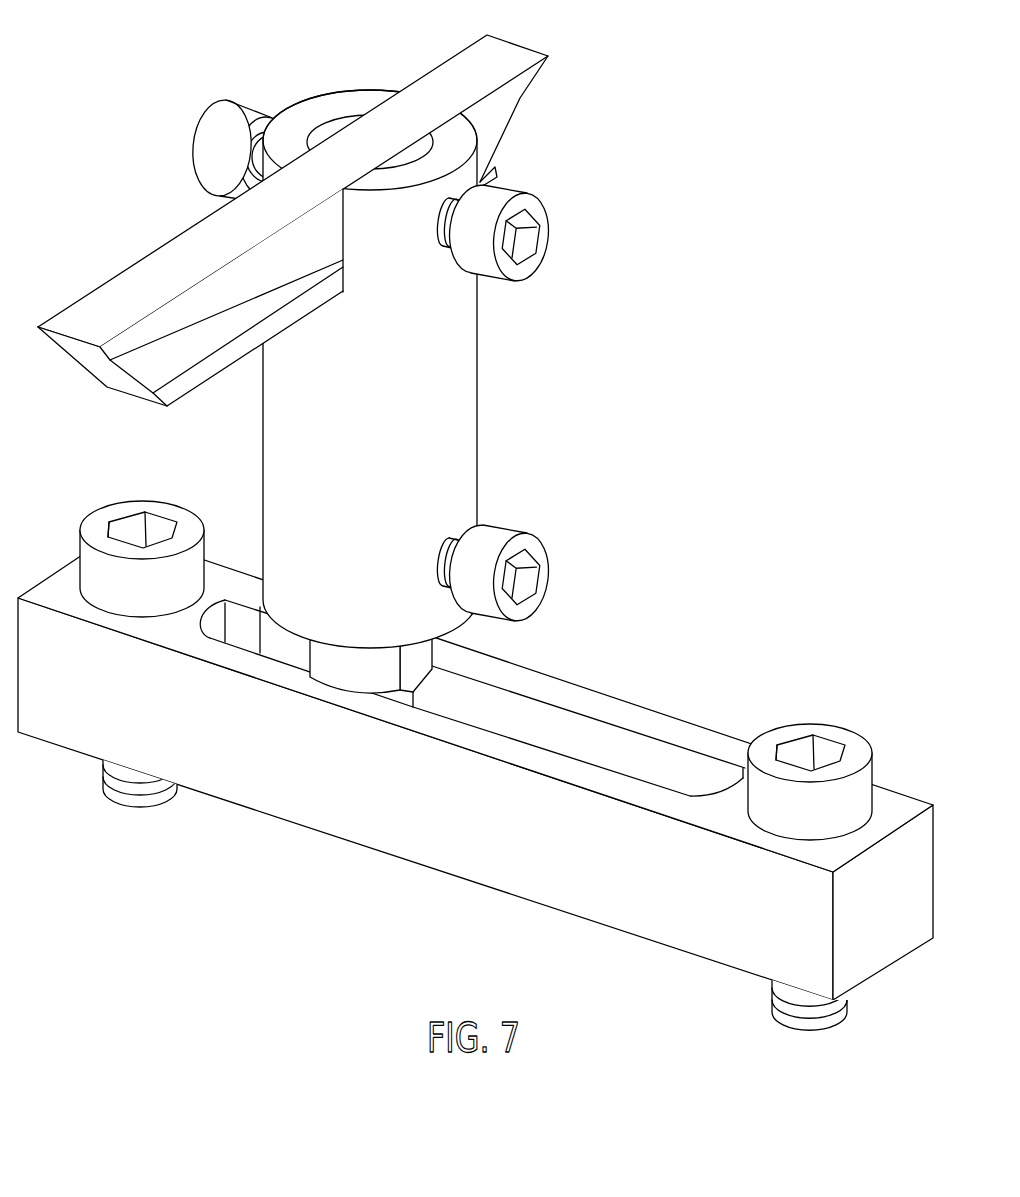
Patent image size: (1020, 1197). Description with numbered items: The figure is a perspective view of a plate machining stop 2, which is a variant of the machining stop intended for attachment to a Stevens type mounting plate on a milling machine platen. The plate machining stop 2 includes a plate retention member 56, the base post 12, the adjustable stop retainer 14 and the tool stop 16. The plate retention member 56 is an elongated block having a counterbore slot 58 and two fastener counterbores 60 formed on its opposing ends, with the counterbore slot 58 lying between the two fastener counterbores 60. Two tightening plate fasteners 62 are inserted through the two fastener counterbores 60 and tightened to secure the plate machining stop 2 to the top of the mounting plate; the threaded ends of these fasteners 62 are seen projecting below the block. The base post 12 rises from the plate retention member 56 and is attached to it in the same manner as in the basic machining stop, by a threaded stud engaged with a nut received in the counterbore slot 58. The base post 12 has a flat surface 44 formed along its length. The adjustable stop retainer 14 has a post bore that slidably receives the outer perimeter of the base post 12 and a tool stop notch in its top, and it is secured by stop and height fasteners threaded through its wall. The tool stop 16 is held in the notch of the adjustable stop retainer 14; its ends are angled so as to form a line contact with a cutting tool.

The plate machining stop 2 is at (475, 532).
The base post 12 is at (337, 677).
The adjustable stop retainer 14 is at (478, 392).
The tool stop 16 is at (110, 300).
The flat surface 44 is at (418, 658).
The plate retention member 56 is at (607, 690).
The counterbore slot 58 is at (688, 745).
The fastener counterbores 60 is at (118, 617).
The tightening plate fasteners 62 is at (122, 505).